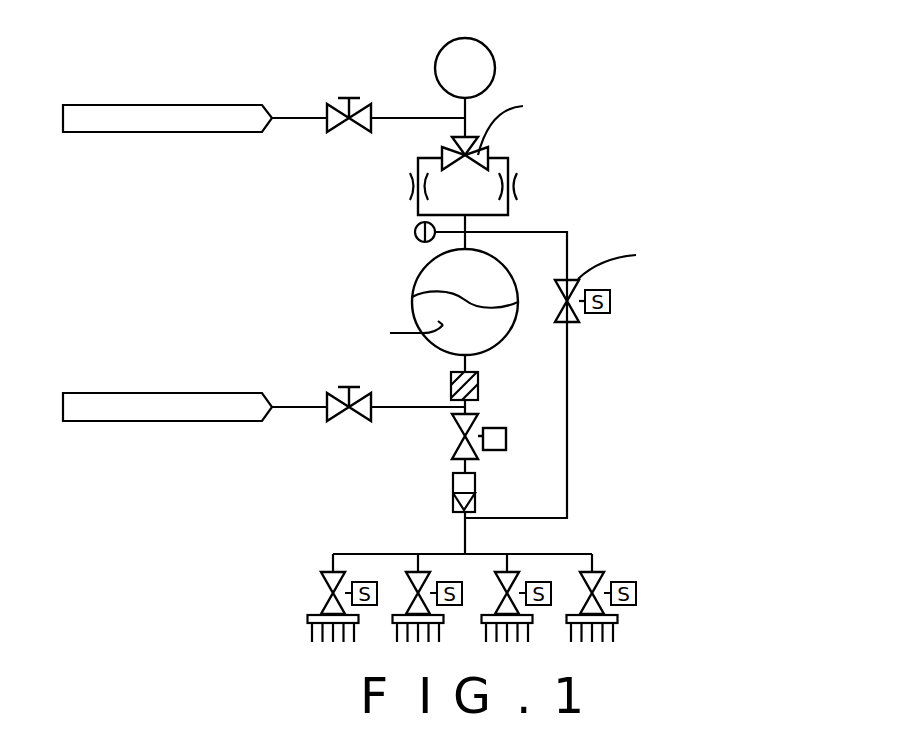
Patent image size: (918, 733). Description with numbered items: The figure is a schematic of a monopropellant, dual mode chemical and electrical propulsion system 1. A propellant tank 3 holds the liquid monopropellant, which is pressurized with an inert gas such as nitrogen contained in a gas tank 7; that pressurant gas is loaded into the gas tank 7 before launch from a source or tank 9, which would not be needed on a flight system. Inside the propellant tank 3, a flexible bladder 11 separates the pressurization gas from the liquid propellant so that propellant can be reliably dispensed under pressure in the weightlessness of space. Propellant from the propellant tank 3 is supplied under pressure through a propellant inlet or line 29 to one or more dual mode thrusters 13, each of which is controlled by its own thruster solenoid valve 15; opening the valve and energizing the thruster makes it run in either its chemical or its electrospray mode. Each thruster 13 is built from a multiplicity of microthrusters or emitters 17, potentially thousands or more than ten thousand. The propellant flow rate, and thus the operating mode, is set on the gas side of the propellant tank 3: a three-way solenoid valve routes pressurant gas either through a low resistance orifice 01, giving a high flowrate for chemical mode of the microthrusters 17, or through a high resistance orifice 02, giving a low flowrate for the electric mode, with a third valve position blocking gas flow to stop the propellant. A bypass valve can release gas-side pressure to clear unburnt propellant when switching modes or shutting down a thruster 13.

The propulsion system 1 is at (718, 207).
The propellant tank 3 is at (421, 301).
The gas tank 7 is at (480, 43).
The source or tank 9 is at (235, 103).
The flexible bladder 11 is at (450, 292).
The dual mode thruster 13 is at (649, 565).
The thruster solenoid valve 15 is at (622, 566).
The microthrusters 17 is at (475, 576).
The propellant inlet or line 29 is at (572, 553).
The low resistance orifice 01 is at (412, 192).
The high resistance orifice 02 is at (517, 188).